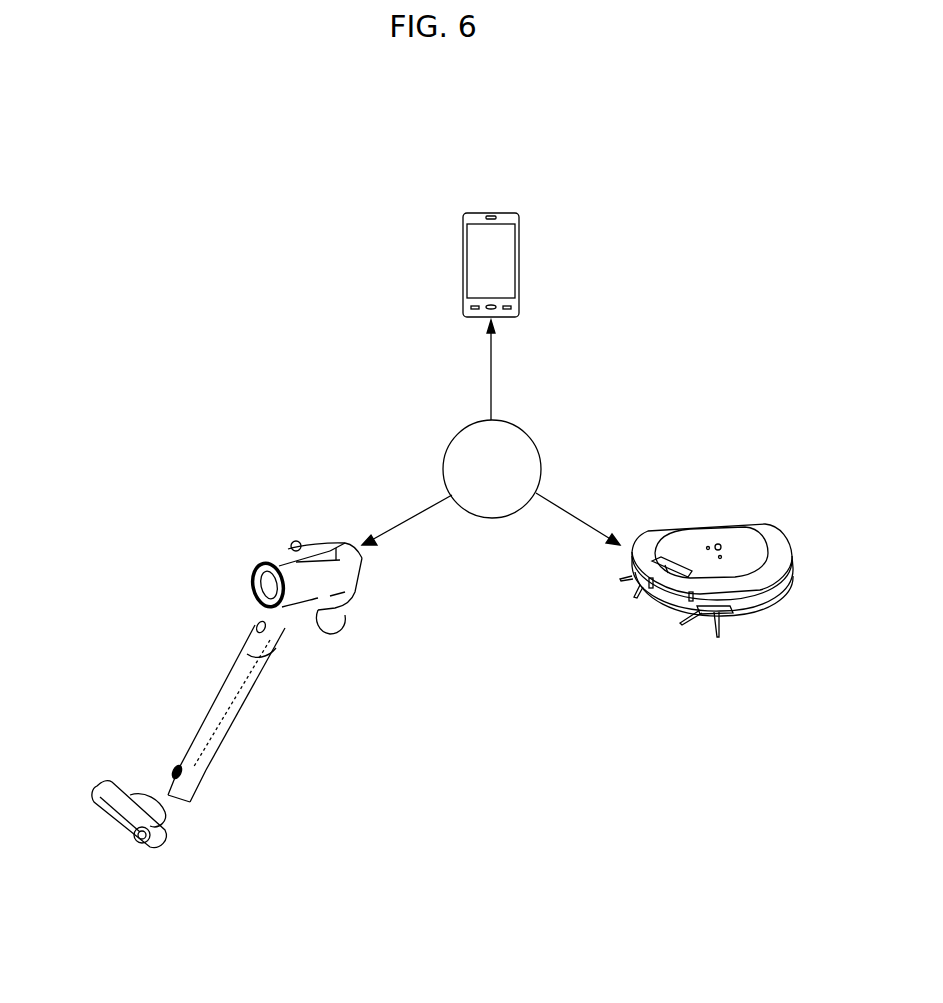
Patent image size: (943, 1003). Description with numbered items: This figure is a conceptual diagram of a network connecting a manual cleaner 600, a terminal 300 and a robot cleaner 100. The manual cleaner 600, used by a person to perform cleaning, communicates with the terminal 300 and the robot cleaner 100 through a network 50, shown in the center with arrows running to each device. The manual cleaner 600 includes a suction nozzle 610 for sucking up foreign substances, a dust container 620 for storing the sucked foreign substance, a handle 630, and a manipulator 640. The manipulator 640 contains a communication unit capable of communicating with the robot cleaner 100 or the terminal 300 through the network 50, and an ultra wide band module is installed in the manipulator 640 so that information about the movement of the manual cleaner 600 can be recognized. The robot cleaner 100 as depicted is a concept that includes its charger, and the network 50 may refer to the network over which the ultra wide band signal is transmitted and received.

The terminal 300 is at (490, 212).
The network 50 is at (520, 428).
The robot cleaner 100 is at (710, 521).
The manual cleaner 600 is at (205, 665).
The suction nozzle 610 is at (122, 813).
The dust container 620 is at (322, 615).
The handle 630 is at (320, 548).
The manipulator 640 is at (295, 545).